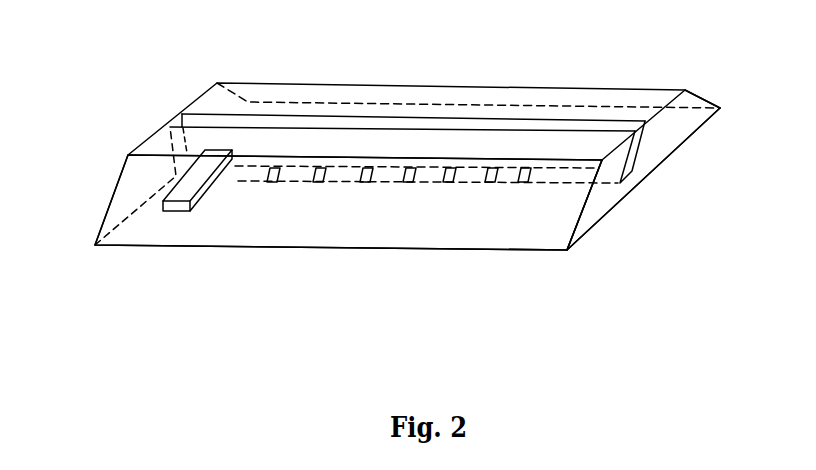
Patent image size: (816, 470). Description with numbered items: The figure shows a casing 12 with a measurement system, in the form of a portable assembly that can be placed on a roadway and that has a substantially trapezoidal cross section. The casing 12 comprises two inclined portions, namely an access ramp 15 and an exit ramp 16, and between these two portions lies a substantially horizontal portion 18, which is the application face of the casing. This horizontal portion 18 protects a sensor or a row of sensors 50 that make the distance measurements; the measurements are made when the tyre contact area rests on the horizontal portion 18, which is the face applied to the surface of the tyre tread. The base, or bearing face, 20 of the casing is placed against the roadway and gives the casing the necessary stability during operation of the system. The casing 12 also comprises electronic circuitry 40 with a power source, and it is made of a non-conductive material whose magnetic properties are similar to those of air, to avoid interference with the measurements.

The casing 12 is at (176, 96).
The access ramp 15 is at (691, 91).
The exit ramp 16 is at (552, 222).
The horizontal portion 18 is at (545, 153).
The base 20 is at (312, 248).
The electronic circuitry 40 is at (172, 211).
The row of sensors 50 is at (273, 182).